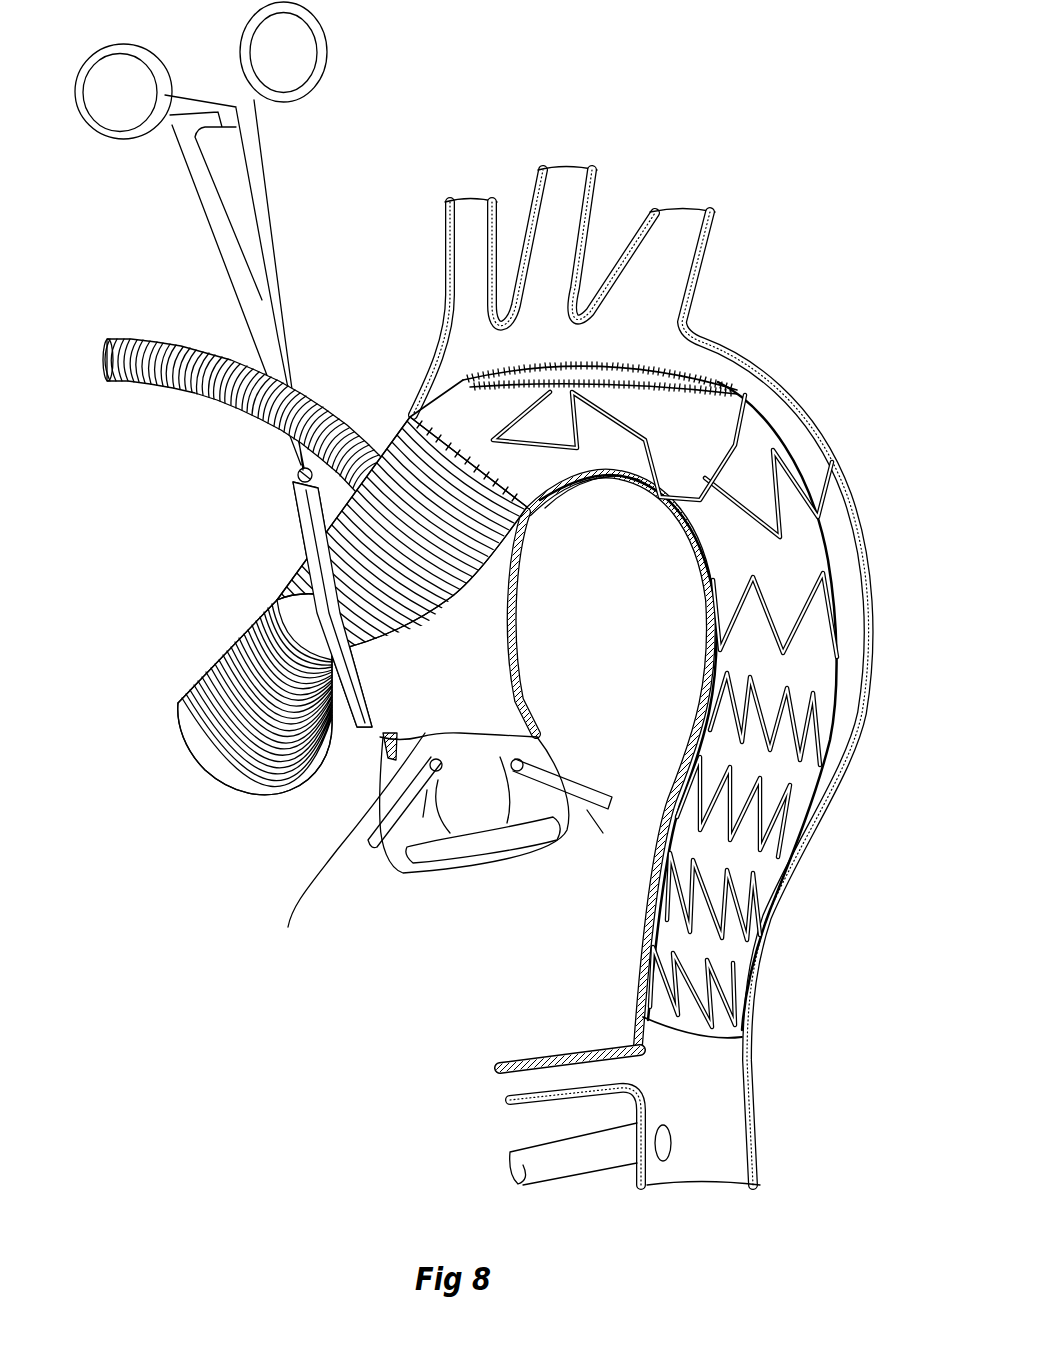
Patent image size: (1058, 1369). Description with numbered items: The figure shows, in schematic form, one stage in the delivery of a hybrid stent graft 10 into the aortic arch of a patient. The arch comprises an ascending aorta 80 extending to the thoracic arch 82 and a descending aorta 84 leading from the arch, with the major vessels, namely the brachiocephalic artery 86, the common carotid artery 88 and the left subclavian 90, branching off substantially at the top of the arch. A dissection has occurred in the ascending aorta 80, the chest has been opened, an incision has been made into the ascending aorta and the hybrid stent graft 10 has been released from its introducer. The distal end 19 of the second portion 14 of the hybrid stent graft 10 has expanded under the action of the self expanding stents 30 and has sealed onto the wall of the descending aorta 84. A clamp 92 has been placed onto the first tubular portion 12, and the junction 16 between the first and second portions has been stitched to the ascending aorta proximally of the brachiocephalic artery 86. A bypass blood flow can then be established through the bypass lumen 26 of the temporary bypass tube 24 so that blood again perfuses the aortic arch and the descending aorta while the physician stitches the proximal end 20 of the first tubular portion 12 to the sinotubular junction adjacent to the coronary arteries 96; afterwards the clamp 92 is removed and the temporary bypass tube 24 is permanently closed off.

The hybrid stent graft 10 is at (747, 425).
The first tubular portion 12 is at (233, 678).
The second portion 14 is at (810, 667).
The junction 16 is at (527, 508).
The distal end 19 is at (730, 1003).
The proximal end 20 is at (205, 773).
The temporary bypass tube 24 is at (170, 368).
The bypass lumen 26 is at (102, 360).
The self expanding stents 30 is at (670, 983).
The ascending aorta 80 is at (520, 643).
The thoracic arch 82 is at (592, 483).
The descending aorta 84 is at (703, 658).
The brachiocephalic artery 86 is at (445, 273).
The common carotid artery 88 is at (597, 212).
The left subclavian 90 is at (700, 263).
The clamp 92 is at (235, 268).
The coronary arteries 96 is at (402, 814).